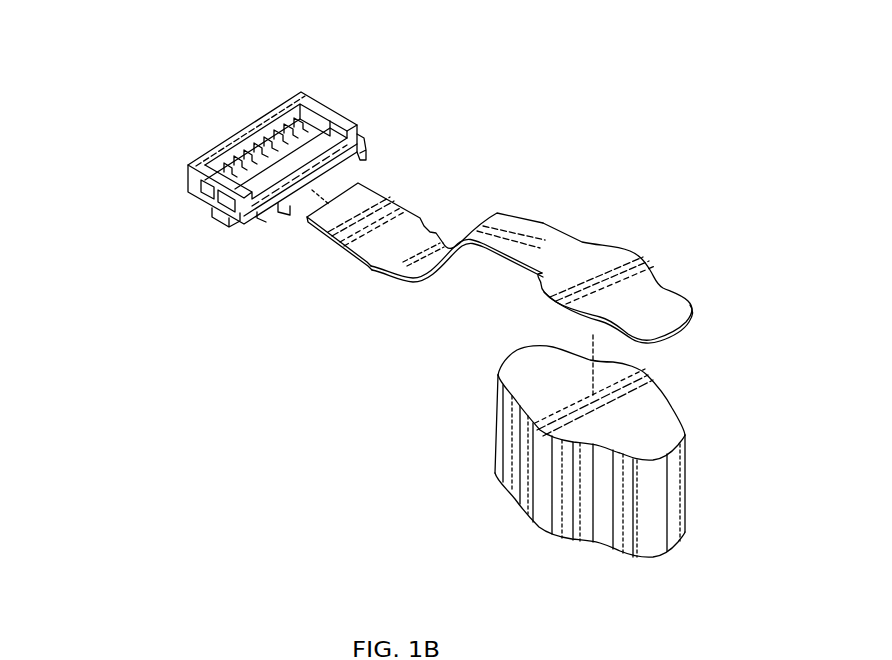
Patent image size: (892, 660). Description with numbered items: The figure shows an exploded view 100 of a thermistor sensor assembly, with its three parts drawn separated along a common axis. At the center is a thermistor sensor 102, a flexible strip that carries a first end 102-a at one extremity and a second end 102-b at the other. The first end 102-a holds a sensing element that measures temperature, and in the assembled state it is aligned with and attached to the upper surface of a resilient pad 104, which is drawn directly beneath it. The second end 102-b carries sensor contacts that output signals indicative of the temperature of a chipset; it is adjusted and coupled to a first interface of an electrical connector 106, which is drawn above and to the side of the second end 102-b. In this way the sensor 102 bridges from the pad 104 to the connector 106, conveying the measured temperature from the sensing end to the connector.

The exploded view 100 is at (603, 140).
The thermistor sensor 102 is at (515, 211).
The first end 102-a is at (663, 296).
The second end 102-b is at (352, 241).
The resilient pad 104 is at (684, 493).
The electrical connector 106 is at (234, 138).